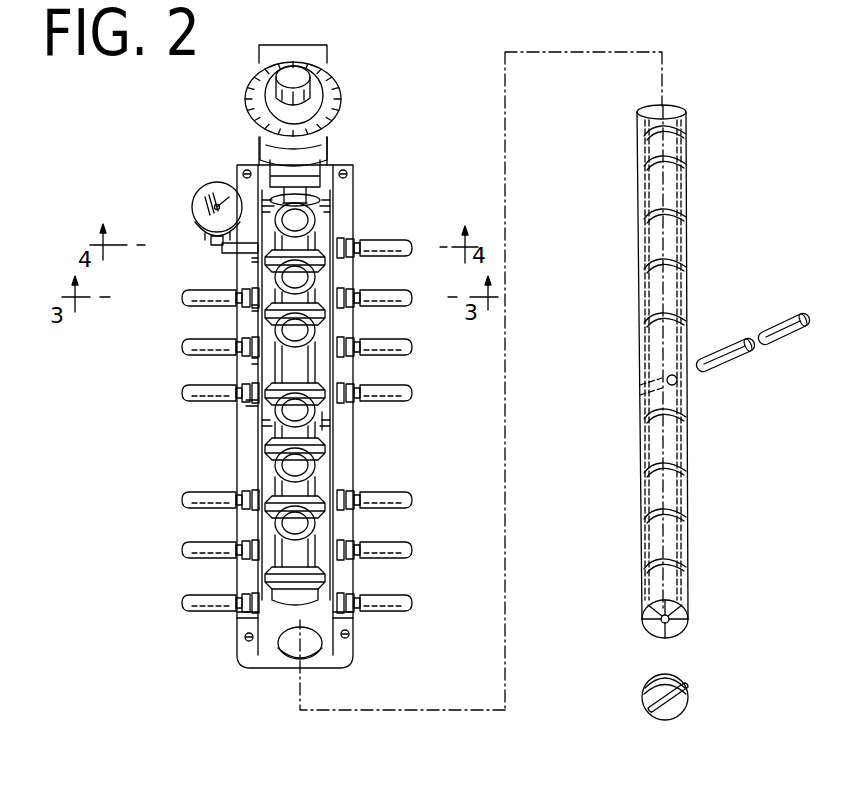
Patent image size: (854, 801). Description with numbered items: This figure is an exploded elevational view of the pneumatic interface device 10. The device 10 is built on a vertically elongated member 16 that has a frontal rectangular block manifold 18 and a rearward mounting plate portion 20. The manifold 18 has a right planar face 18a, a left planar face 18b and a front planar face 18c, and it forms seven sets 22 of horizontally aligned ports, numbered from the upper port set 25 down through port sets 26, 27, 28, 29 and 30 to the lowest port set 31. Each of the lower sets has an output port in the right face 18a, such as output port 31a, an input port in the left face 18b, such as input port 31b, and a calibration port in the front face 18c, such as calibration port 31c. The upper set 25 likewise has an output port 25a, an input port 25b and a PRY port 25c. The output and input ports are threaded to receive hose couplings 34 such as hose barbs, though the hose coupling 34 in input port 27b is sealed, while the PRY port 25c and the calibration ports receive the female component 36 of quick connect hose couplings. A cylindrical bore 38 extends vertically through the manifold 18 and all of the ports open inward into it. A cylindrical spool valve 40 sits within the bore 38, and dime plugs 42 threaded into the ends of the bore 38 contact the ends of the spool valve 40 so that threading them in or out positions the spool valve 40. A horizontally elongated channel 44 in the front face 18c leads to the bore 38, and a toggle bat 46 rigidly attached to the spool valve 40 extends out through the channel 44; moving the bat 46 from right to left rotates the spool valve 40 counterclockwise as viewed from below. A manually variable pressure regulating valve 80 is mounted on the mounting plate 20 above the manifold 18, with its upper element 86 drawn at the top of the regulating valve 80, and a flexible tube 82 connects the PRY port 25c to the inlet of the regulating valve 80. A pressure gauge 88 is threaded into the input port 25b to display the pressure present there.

The device 10 is at (404, 119).
The vertically elongated member 16 is at (353, 223).
The manifold 18 is at (272, 469).
The right planar face 18a is at (357, 385).
The left planar face 18b is at (236, 379).
The front planar face 18c is at (400, 242).
The mounting plate portion 20 is at (355, 177).
The sets of ports 22 is at (346, 343).
The port set 25 is at (222, 250).
The output port 25a is at (352, 266).
The input port 25b is at (256, 256).
The PRY port 25c is at (313, 222).
The port set 26 is at (257, 315).
The port set 27 is at (257, 360).
The input port 27b is at (215, 313).
The port set 28 is at (246, 404).
The port set 29 is at (256, 515).
The port set 30 is at (256, 574).
The port set 31 is at (258, 622).
The output port 31a is at (353, 596).
The input port 31b is at (215, 604).
The calibration port 31c is at (212, 607).
The hose coupling 34 is at (313, 473).
The female component of quick connect hose coupling 36 is at (284, 434).
The cylindrical bore 38 is at (300, 648).
The spool valve 40 is at (676, 134).
The dime plug 42 is at (688, 691).
The channel 44 is at (320, 421).
The toggle bat 46 is at (728, 347).
The pressure regulating valve 80 is at (328, 78).
The flexible tube 82 is at (283, 192).
The knob cap 86 is at (345, 103).
The pressure gauge 88 is at (215, 197).